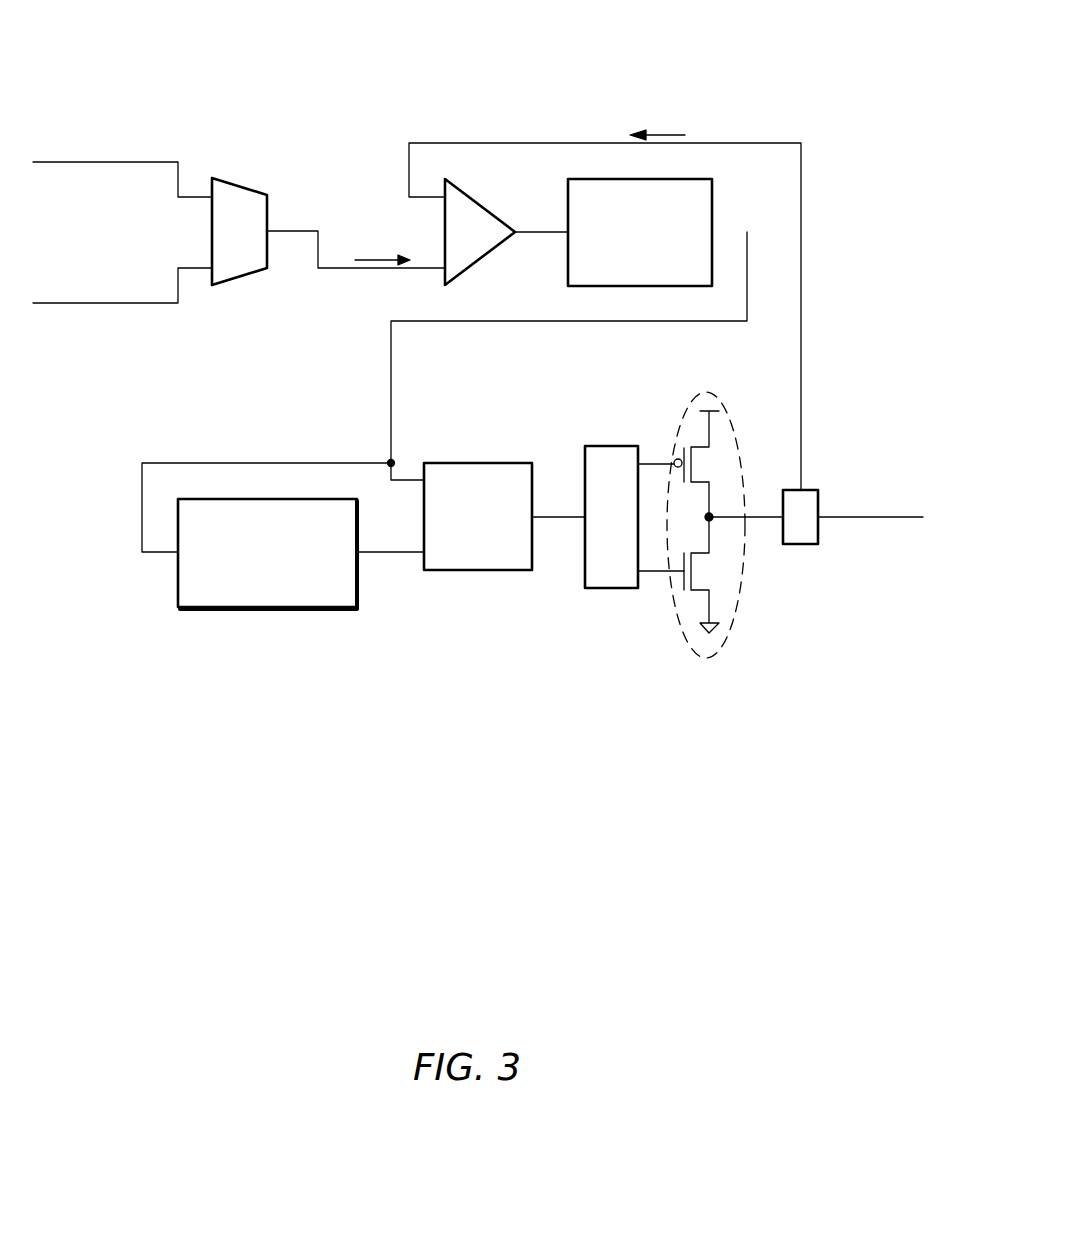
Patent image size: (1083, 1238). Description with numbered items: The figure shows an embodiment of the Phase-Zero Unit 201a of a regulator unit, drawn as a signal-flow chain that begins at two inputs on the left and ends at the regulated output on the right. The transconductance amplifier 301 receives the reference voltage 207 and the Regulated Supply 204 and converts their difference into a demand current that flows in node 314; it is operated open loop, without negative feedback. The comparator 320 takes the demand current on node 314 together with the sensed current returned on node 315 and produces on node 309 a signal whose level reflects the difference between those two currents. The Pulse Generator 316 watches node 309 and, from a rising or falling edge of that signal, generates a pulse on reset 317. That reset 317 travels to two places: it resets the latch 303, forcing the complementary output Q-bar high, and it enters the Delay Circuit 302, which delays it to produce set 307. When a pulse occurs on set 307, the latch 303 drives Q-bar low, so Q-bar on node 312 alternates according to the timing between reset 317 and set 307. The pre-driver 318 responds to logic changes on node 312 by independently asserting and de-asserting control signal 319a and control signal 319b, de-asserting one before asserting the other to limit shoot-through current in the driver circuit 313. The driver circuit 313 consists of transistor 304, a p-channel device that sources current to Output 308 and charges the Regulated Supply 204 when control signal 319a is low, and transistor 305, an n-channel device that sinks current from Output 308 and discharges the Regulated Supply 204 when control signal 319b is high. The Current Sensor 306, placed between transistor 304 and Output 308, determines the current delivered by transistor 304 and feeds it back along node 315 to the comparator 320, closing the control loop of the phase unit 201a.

The reference voltage 207 is at (122, 164).
The Regulated Supply 204 is at (122, 289).
The transconductance amplifier 301 is at (237, 186).
The node 314 is at (331, 270).
The comparator 320 is at (488, 208).
The node 309 is at (539, 234).
The Pulse Generator 316 is at (640, 232).
The node 315 is at (454, 142).
The Phase-0 Unit 201a is at (809, 103).
The reset 317 is at (393, 374).
The Delay Circuit 302 is at (266, 536).
The set 307 is at (398, 556).
The latch 303 is at (478, 572).
The node 312 is at (549, 520).
The pre-driver 318 is at (611, 517).
The control signal 319a is at (655, 463).
The control signal 319b is at (655, 572).
The driver circuit 313 is at (720, 401).
The transistor 304 is at (708, 454).
The transistor 305 is at (708, 580).
The Current Sensor 306 is at (810, 545).
The Output 308 is at (875, 505).